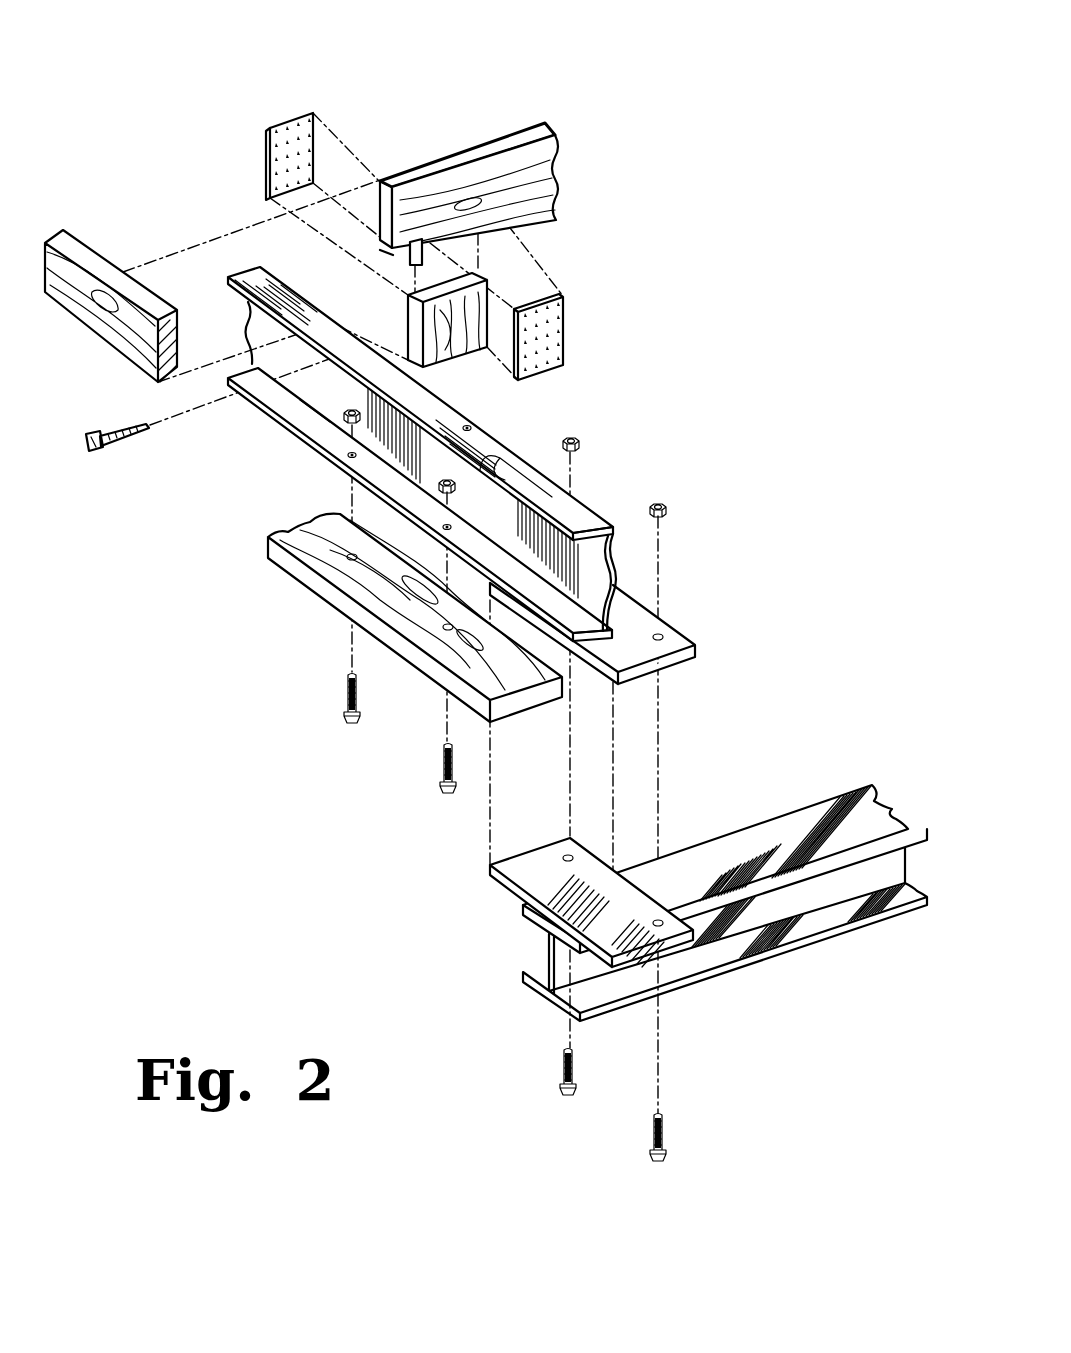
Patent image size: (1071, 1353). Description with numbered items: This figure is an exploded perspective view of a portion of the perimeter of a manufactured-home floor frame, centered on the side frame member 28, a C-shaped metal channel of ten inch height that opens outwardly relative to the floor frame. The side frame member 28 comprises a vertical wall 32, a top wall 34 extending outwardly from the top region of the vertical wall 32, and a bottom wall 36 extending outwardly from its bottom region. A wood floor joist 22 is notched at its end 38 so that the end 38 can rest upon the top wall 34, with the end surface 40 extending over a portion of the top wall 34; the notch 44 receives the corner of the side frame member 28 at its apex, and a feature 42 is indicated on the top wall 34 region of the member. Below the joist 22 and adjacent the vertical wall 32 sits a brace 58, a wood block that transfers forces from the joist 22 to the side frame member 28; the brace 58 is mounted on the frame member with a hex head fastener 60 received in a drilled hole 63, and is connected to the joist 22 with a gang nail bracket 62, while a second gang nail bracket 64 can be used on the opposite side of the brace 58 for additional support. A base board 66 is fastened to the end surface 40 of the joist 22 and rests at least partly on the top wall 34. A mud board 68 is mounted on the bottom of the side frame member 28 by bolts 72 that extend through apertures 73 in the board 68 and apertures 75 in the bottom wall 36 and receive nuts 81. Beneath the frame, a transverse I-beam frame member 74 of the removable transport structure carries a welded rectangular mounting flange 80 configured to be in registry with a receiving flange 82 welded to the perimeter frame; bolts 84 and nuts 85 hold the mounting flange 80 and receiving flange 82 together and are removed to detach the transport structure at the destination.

The floor joist 22 is at (505, 135).
The side frame member 28 is at (427, 454).
The vertical wall 32 is at (506, 551).
The top wall 34 is at (474, 432).
The bottom wall 36 is at (575, 530).
The end 38 is at (406, 152).
The end surface 40 is at (377, 180).
The slot 42 is at (540, 452).
The notch 44 is at (384, 257).
The brace 58 is at (497, 278).
The fastener 60 is at (98, 450).
The gang nail bracket 62 is at (566, 323).
The hole 63 is at (282, 420).
The second gang nail bracket 64 is at (302, 113).
The base board 66 is at (75, 318).
The mud board 68 is at (388, 618).
The bolt 72 is at (343, 714).
The aperture 73 is at (348, 562).
The transverse I-beam frame member 74 is at (787, 826).
The aperture 75 is at (347, 422).
The mounting flange 80 is at (528, 878).
The nut 81 is at (345, 453).
The receiving flange 82 is at (677, 637).
The bolt 84 is at (558, 1092).
The nut 85 is at (656, 500).